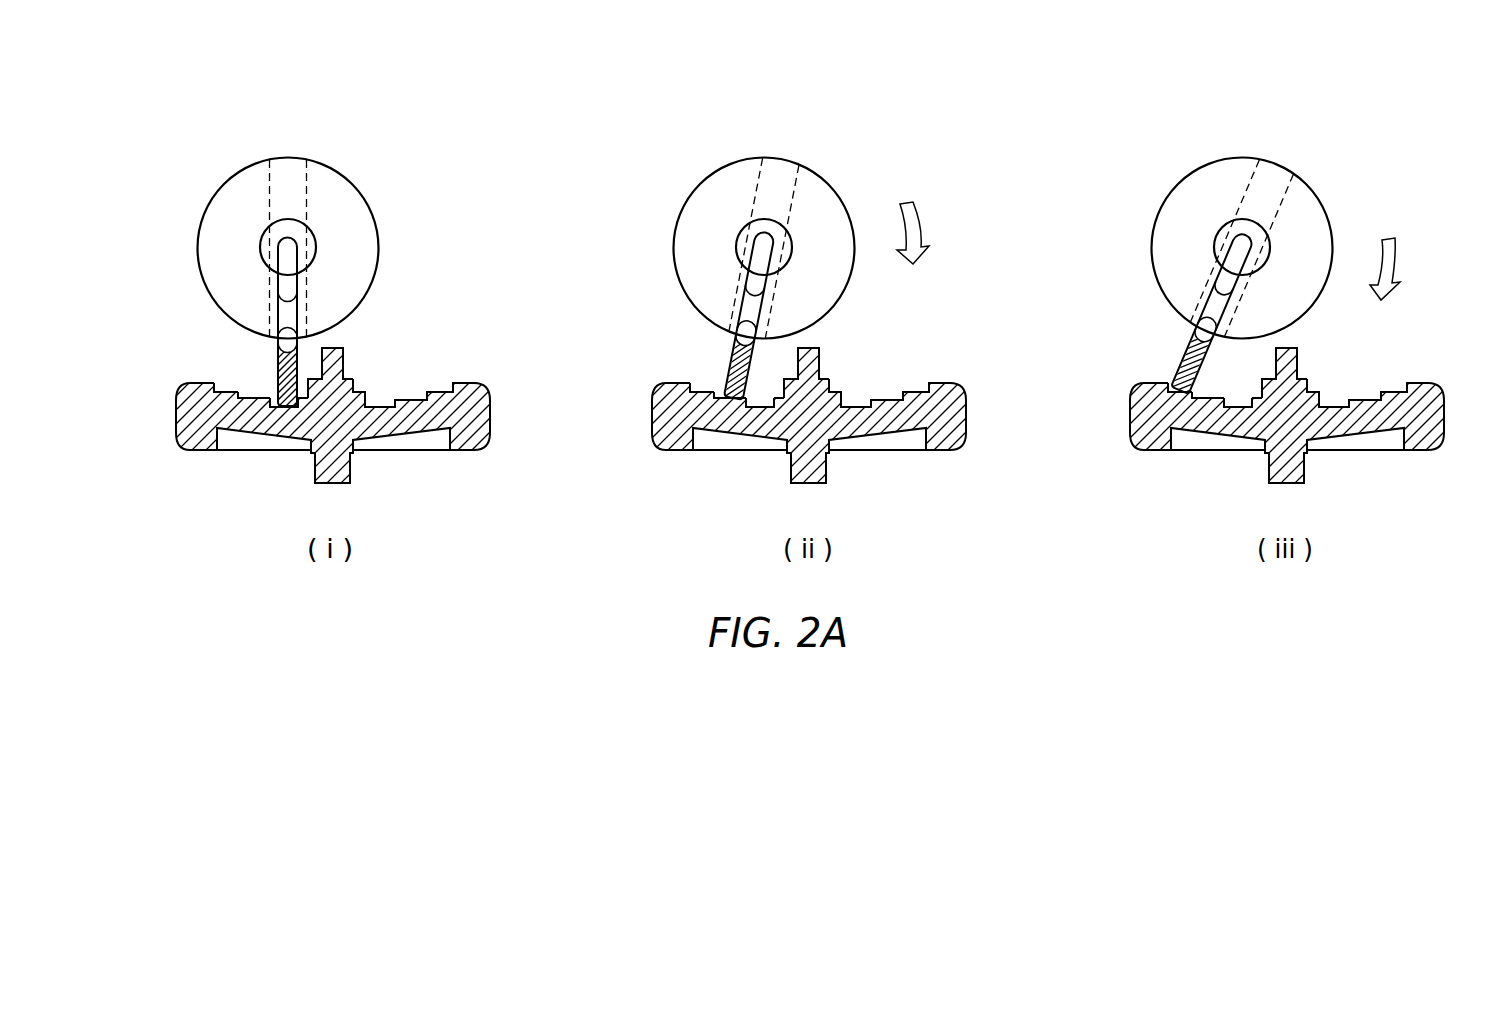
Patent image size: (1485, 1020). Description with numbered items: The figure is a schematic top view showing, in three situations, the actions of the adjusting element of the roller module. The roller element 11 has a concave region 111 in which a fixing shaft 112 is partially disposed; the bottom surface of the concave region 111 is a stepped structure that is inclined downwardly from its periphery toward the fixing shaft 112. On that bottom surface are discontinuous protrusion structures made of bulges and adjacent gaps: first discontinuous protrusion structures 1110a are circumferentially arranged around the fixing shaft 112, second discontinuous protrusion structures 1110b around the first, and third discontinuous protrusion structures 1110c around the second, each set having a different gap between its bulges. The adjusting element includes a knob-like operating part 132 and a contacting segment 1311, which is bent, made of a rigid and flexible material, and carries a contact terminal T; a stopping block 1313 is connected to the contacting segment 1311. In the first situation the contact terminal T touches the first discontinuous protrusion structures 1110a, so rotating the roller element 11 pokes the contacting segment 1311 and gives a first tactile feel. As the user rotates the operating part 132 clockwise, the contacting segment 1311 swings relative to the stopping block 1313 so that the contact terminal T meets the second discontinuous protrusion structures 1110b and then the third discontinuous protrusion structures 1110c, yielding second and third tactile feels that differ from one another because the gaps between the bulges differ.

The roller element 11 is at (175, 413).
The concave region 111 is at (438, 376).
The fixing shaft 112 is at (337, 358).
The first discontinuous protrusion structures 1110a is at (272, 402).
The second discontinuous protrusion structures 1110b is at (245, 398).
The third discontinuous protrusion structures 1110c is at (218, 390).
The operating part 132 is at (250, 161).
The contacting segment 1311 is at (298, 340).
The stopping block 1313 is at (312, 240).
The contact terminal T is at (290, 412).